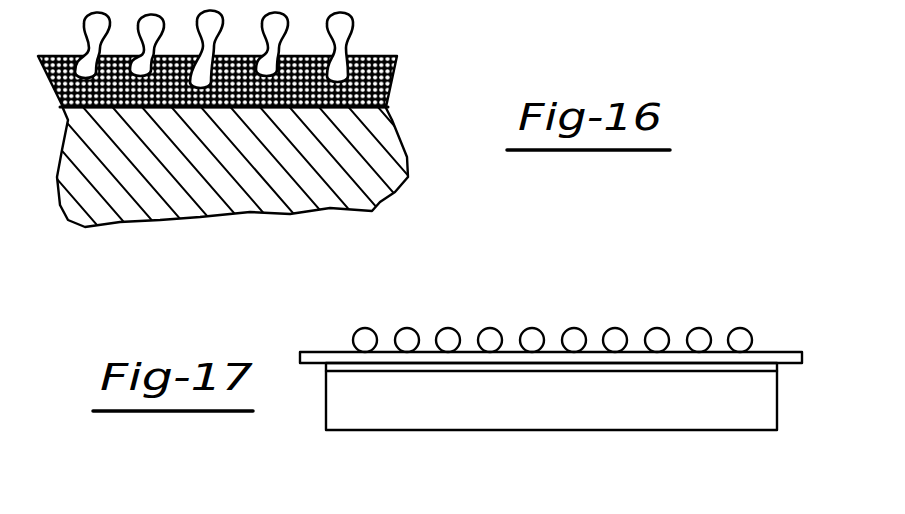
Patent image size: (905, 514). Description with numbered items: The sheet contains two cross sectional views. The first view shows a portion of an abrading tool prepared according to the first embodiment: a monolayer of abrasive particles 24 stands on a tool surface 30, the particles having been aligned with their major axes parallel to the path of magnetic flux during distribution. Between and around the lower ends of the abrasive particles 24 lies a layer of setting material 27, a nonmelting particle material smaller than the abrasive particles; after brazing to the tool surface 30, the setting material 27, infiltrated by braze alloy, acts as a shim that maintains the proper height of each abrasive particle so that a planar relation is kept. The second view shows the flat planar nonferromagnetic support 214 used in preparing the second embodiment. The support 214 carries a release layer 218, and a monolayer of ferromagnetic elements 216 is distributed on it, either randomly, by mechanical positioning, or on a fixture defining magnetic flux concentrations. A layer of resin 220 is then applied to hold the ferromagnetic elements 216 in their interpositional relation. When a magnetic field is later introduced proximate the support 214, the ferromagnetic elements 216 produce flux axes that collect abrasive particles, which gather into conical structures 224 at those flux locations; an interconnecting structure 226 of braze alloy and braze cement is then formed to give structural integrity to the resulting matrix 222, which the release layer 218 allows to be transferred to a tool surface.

In FIG. 16, the abrasive particles 24 is at (360, 34).
In FIG. 16, the setting material 27 is at (393, 83).
In FIG. 16, the tool surface 30 is at (253, 161).
In FIG. 17, the flat planar nonferromagnetic support 214 is at (693, 413).
In FIG. 17, the ferromagnetic elements 216 is at (488, 327).
In FIG. 17, the release layer 218 is at (768, 358).
In FIG. 17, the layer of resin 220 is at (620, 352).
In FIG. 17, the matrix 222 is at (509, 477).
In FIG. 17, the conical structures 224 is at (272, 506).
In FIG. 17, the interconnecting structure 226 is at (366, 513).